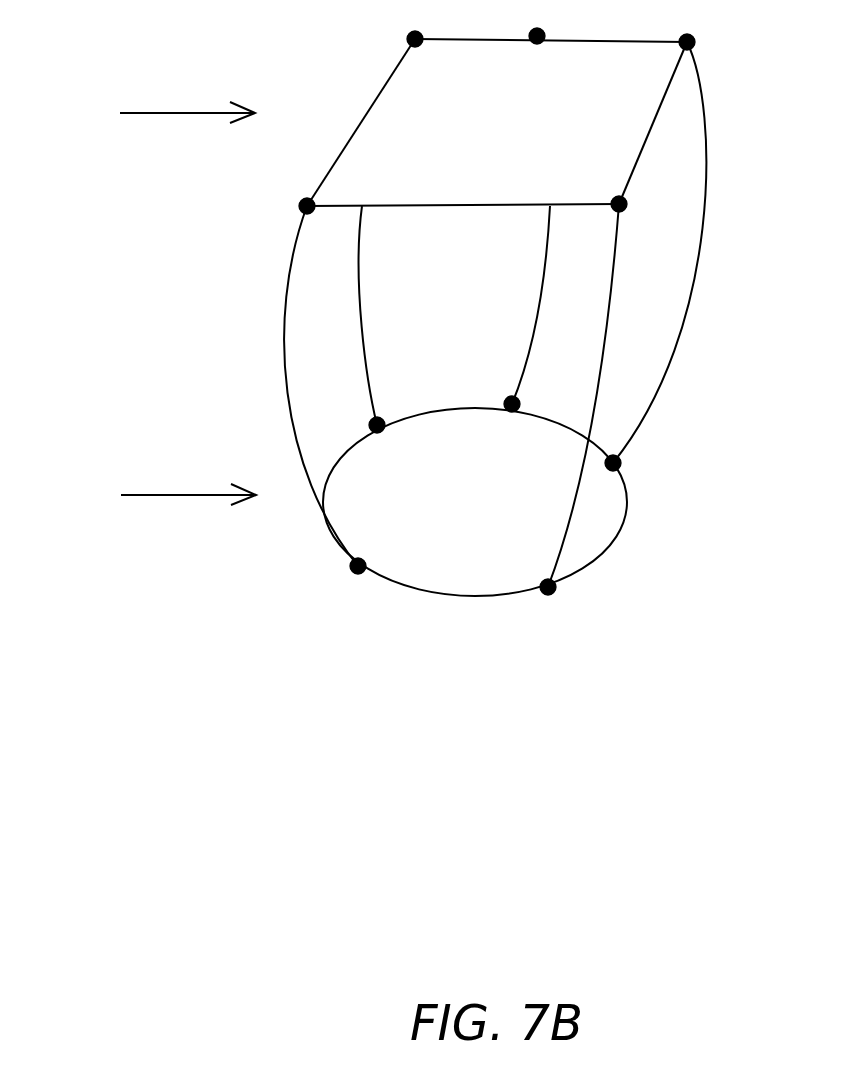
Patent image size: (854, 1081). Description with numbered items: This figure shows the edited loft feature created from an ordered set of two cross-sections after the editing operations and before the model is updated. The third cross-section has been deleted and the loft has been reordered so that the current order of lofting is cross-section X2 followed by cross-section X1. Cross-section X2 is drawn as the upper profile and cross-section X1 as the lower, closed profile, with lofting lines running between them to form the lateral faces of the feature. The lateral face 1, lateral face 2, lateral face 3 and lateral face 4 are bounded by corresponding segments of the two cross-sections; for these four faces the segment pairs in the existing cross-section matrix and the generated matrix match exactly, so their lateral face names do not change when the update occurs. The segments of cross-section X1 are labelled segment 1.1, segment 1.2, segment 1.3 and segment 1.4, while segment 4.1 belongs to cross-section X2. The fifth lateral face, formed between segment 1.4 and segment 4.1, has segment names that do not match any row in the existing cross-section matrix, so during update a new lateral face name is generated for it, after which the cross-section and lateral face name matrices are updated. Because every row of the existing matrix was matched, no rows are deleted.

The lateral face 1 is at (349, 306).
The segment name 1.1 is at (475, 525).
The segment name 1.2 is at (653, 509).
The segment name 1.3 is at (540, 309).
The segment name 1.4 is at (408, 319).
The lateral face 2 is at (467, 391).
The lateral face 3 is at (659, 252).
The lateral face 4 is at (551, 28).
The segment name 4.1 is at (499, 28).
The cross-section X1 is at (150, 498).
The cross-section X2 is at (150, 117).